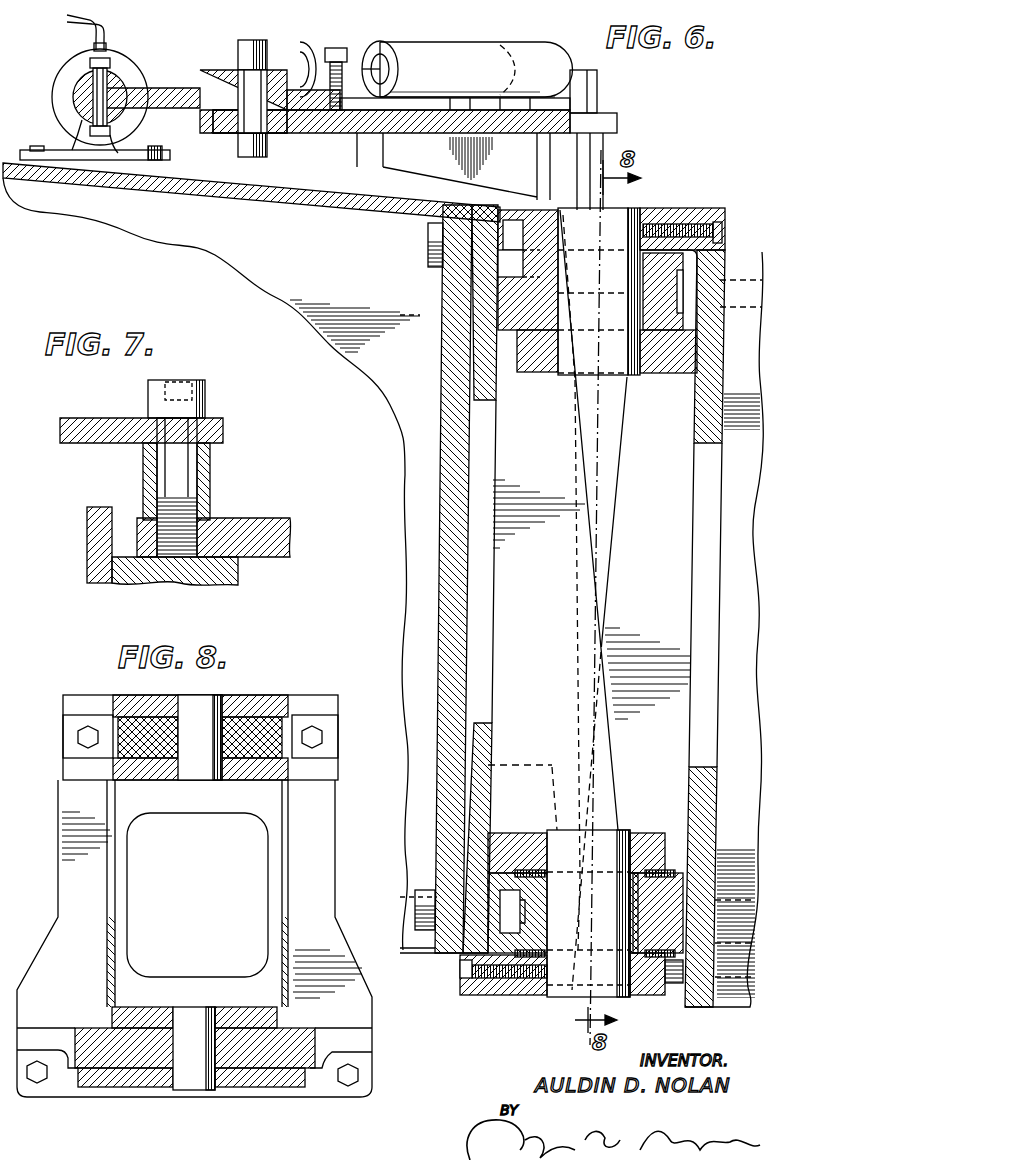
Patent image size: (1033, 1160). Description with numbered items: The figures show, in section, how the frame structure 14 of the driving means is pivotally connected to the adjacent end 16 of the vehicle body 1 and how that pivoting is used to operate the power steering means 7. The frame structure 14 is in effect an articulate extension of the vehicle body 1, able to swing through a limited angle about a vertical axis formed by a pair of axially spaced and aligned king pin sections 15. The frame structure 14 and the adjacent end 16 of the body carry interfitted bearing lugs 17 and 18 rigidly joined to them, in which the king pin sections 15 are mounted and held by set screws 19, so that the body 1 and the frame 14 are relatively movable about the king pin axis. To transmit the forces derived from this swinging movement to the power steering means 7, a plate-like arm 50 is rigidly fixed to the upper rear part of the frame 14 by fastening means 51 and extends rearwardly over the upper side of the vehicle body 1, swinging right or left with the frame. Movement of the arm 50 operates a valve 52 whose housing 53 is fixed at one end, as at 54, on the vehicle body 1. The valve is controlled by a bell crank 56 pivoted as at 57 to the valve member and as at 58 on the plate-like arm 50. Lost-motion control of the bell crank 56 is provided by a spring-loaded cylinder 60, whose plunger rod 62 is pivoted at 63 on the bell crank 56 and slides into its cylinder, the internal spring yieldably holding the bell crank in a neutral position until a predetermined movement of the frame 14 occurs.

In FIG. 6, the vehicle body 1 is at (305, 282).
In FIG. 6, the power steering means 7 is at (476, 54).
In FIG. 6, the frame structure 14 is at (729, 210).
In FIG. 7, the frame structure 14 is at (272, 514).
In FIG. 8, the frame structure 14 is at (350, 703).
In FIG. 6, the king pin sections 15 is at (612, 352).
In FIG. 8, the king pin sections 15 is at (205, 703).
In FIG. 6, the adjacent end of the vehicle body 16 is at (496, 521).
In FIG. 7, the adjacent end of the vehicle body 16 is at (218, 590).
In FIG. 6, the bearing lug 17 is at (668, 210).
In FIG. 8, the bearing lug 17 is at (160, 768).
In FIG. 6, the bearing lug 18 is at (668, 332).
In FIG. 8, the bearing lug 18 is at (260, 748).
In FIG. 6, the set screw 19 is at (723, 232).
In FIG. 6, the plate-like arm 50 is at (322, 128).
In FIG. 7, the plate-like arm 50 is at (212, 432).
In FIG. 6, the fastening means 51 is at (597, 98).
In FIG. 7, the fastening means 51 is at (183, 478).
In FIG. 6, the valve 52 is at (132, 50).
In FIG. 6, the valve housing 53 is at (81, 89).
In FIG. 6, the fixing point of the housing 54 is at (115, 153).
In FIG. 6, the bell crank 56 is at (163, 87).
In FIG. 6, the pivot of bell crank to valve member 57 is at (92, 95).
In FIG. 6, the pivot of bell crank on arm 58 is at (250, 40).
In FIG. 6, the spring-loaded cylinder 60 is at (487, 54).
In FIG. 6, the plunger rod 62 is at (368, 52).
In FIG. 6, the pivot of plunger rod 63 is at (339, 48).